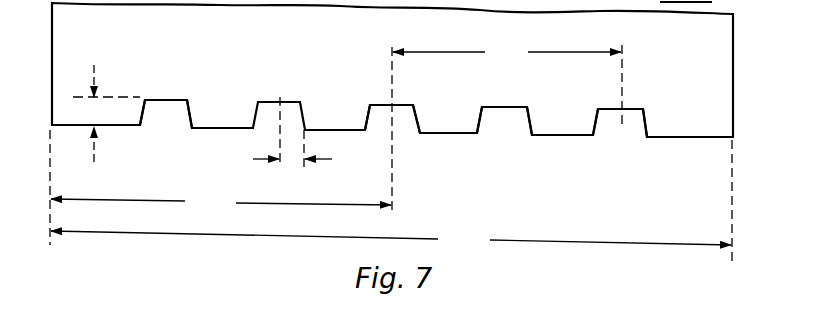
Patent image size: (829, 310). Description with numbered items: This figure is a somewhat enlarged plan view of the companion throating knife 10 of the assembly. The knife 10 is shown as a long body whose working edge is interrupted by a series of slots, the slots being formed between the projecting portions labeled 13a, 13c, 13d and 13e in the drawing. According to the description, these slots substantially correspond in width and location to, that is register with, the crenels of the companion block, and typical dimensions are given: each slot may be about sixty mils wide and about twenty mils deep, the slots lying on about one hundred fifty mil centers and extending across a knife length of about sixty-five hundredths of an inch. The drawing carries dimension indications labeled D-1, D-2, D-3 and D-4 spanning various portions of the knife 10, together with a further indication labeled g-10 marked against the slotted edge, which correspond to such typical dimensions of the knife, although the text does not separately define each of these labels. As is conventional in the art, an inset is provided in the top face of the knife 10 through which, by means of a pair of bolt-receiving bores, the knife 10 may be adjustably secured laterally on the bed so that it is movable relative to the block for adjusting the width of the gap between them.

The throating knife 10 is at (404, 33).
The tooth 13a is at (155, 104).
The tooth 13c is at (401, 108).
The tooth 13d is at (493, 110).
The tooth 13e is at (609, 112).
The tooth height dimension g-10 is at (106, 103).
The overall length dimension D-1 is at (391, 202).
The left segment dimension D-2 is at (220, 187).
The right segment dimension D-3 is at (507, 129).
The tooth spacing dimension D-4 is at (309, 133).